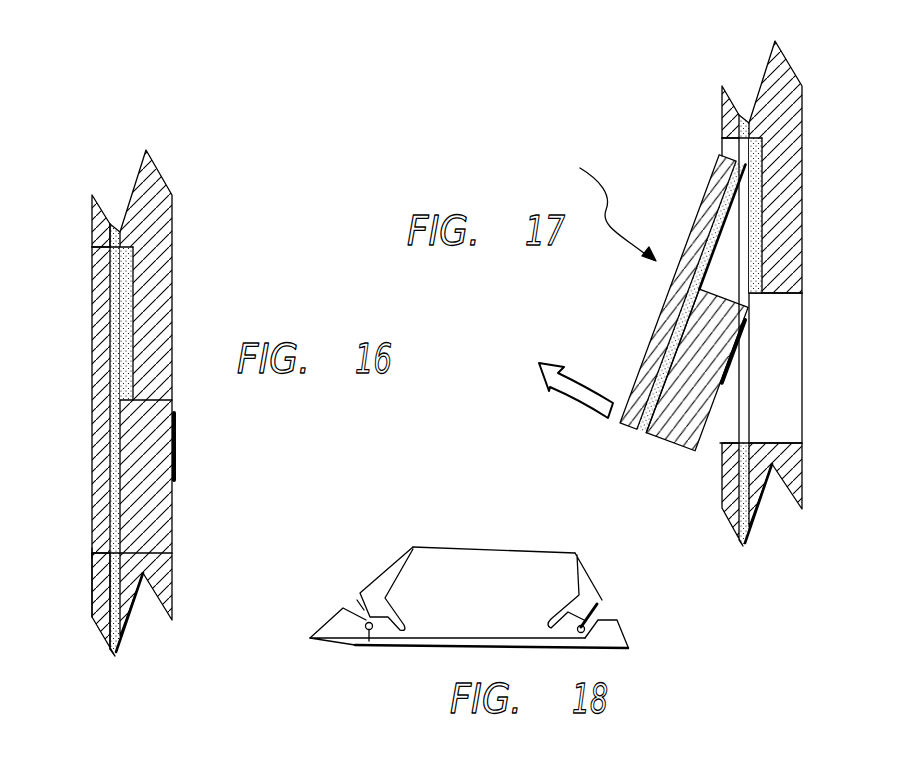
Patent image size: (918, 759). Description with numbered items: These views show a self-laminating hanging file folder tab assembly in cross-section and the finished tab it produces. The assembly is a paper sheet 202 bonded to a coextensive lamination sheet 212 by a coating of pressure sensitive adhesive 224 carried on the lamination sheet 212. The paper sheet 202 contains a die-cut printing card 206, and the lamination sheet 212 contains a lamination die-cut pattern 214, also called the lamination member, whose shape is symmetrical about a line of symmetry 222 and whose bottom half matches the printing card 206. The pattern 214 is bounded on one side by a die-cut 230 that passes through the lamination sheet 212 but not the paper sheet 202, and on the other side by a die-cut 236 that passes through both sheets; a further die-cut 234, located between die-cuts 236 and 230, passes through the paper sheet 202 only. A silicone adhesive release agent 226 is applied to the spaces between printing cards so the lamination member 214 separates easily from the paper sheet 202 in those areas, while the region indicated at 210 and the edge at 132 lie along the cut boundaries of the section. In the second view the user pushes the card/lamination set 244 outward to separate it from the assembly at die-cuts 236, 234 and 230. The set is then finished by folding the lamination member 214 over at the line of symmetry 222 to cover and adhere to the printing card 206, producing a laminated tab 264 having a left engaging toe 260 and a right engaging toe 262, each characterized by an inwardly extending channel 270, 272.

In FIG. 16, the lower slot edge 132 is at (92, 553).
In FIG. 16, the paper sheet 202 is at (173, 238).
In FIG. 17, the paper sheet 202 is at (770, 292).
In FIG. 17, the die-cut printing card 206 is at (673, 438).
In FIG. 18, the die-cut printing card 206 is at (392, 565).
In FIG. 16, the stop bar 210 is at (176, 430).
In FIG. 17, the stop bar 210 is at (733, 360).
In FIG. 16, the lamination sheet 212 is at (92, 220).
In FIG. 17, the lamination sheet 212 is at (722, 108).
In FIG. 16, the lamination die-cut pattern 214 is at (92, 418).
In FIG. 17, the lamination die-cut pattern 214 is at (662, 312).
In FIG. 18, the line of symmetry 222 is at (547, 547).
In FIG. 16, the pressure sensitive adhesive 224 is at (122, 618).
In FIG. 17, the pressure sensitive adhesive 224 is at (747, 500).
In FIG. 16, the adhesive release agent 226 is at (126, 325).
In FIG. 17, the adhesive release agent 226 is at (758, 218).
In FIG. 16, the die-cut 230 is at (106, 245).
In FIG. 17, the die-cut 230 is at (738, 131).
In FIG. 16, the die-cut 234 is at (167, 400).
In FIG. 17, the die-cut 234 is at (800, 293).
In FIG. 16, the die-cut 236 is at (162, 553).
In FIG. 17, the die-cut 236 is at (790, 443).
In FIG. 17, the card/lamination set 244 is at (604, 202).
In FIG. 18, the left engaging toe 260 is at (335, 628).
In FIG. 18, the right engaging toe 262 is at (612, 643).
In FIG. 18, the laminated tab 264 is at (395, 662).
In FIG. 18, the inwardly extending channel 270 is at (358, 604).
In FIG. 18, the inwardly extending channel 272 is at (606, 605).